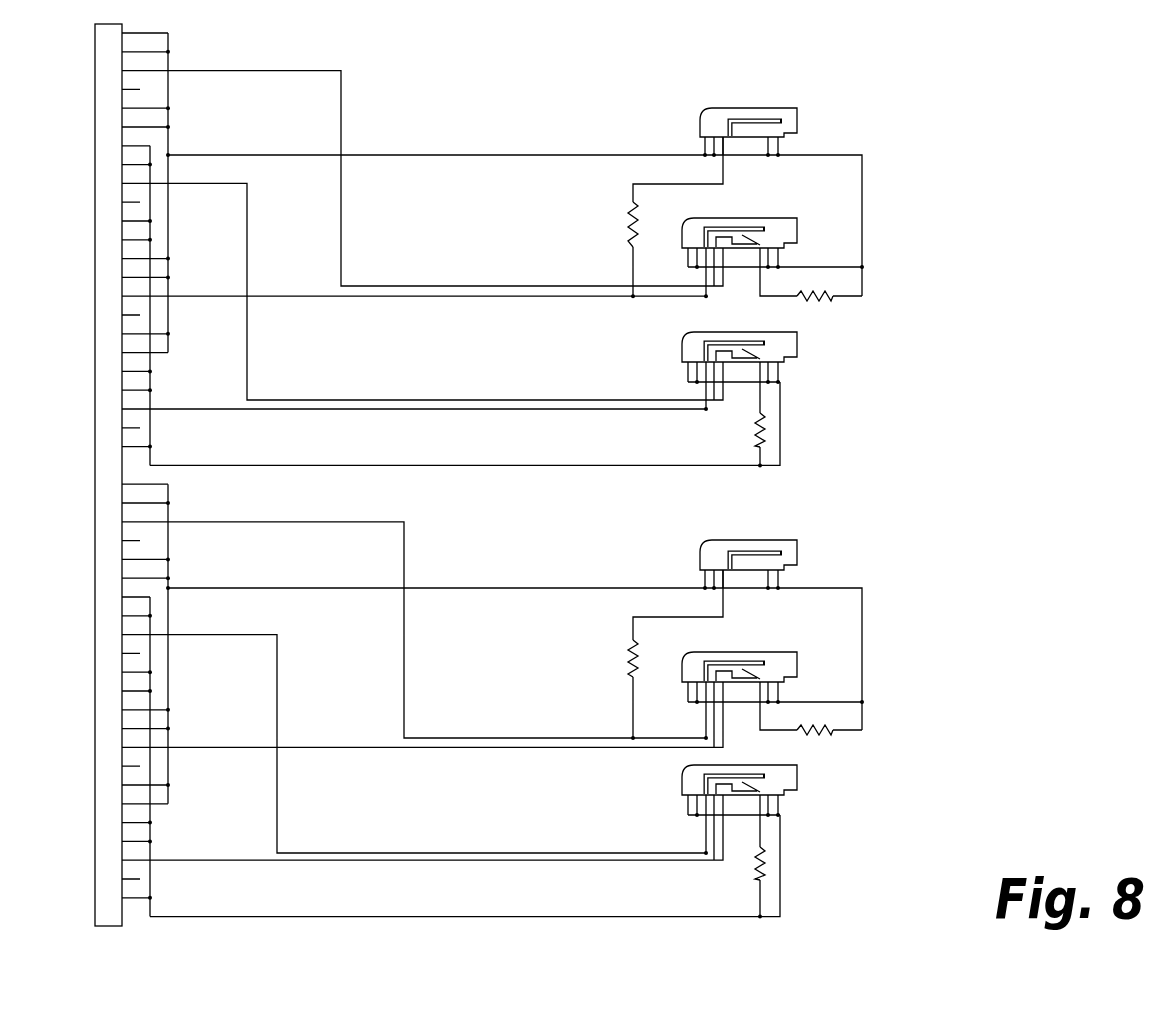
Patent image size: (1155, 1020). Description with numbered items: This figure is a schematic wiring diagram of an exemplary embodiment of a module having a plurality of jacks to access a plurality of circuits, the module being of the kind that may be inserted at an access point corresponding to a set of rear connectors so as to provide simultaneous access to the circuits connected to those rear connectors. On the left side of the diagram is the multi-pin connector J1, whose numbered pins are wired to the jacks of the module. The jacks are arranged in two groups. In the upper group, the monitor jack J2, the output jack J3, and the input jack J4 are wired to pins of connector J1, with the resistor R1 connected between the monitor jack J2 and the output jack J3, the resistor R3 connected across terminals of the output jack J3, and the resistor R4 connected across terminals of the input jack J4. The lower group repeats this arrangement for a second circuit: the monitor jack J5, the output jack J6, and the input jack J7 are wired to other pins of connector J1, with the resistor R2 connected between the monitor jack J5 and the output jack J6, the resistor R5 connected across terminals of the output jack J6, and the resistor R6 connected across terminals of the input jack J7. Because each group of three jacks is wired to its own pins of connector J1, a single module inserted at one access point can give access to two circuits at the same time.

The 48-pin connector J1 is at (132, 467).
The MON jack J2 is at (772, 126).
The OUT jack J3 is at (761, 237).
The IN jack J4 is at (752, 351).
The MON jack J5 is at (772, 558).
The OUT jack J6 is at (761, 671).
The IN jack J7 is at (752, 784).
The resistor R1 768 ohm R1 is at (642, 224).
The resistor R2 768 ohm R2 is at (642, 658).
The resistor R3 75 ohm R3 is at (815, 296).
The resistor R4 76 ohm R4 is at (751, 430).
The resistor R5 75 ohm R5 is at (815, 730).
The resistor R6 76 ohm R6 is at (751, 863).